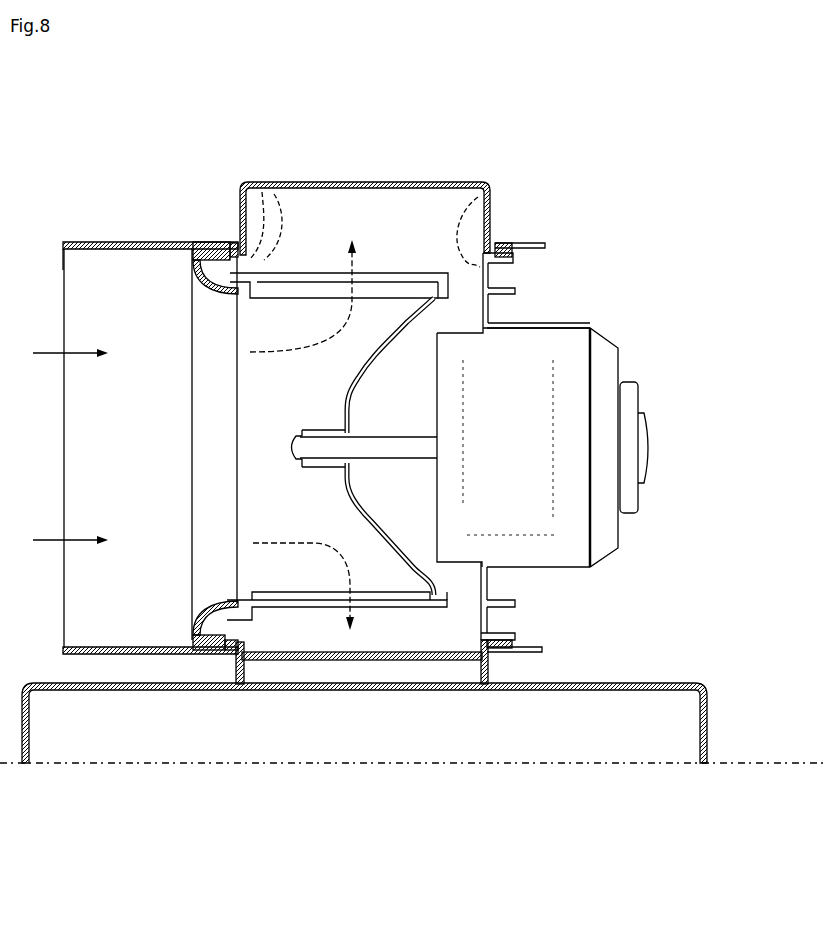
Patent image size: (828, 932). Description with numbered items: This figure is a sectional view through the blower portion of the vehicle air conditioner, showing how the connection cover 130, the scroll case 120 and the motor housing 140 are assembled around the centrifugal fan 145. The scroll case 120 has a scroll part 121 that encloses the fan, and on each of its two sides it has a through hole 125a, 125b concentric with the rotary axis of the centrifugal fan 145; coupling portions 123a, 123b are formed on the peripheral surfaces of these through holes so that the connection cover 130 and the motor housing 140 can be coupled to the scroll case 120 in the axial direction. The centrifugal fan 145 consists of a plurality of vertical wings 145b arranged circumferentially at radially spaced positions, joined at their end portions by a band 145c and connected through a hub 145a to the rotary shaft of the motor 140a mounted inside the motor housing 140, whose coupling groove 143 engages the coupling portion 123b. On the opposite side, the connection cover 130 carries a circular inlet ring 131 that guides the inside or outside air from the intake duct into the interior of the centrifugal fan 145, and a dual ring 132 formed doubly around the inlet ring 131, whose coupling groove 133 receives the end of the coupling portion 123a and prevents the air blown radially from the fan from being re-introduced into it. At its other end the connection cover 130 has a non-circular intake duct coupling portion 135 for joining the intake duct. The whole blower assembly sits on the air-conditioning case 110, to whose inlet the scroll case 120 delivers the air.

The air-conditioning case 110 is at (708, 727).
The scroll case 120 is at (385, 182).
The scroll part 121 is at (405, 132).
The coupling portion 123a is at (217, 242).
The coupling portion 123b is at (507, 262).
The through hole 125a is at (258, 182).
The through hole 125b is at (487, 182).
The connection cover 130 is at (113, 241).
The inlet ring 131 is at (228, 293).
The dual ring 132 is at (197, 241).
The coupling groove 133 is at (233, 242).
The intake duct coupling portion 135 is at (62, 263).
The motor housing 140 is at (597, 605).
The motor 140a is at (560, 522).
The coupling groove 143 is at (500, 240).
The centrifugal fan 145 is at (415, 273).
The hub 145a is at (385, 368).
The vertical wings 145b is at (315, 272).
The band 145c is at (275, 192).